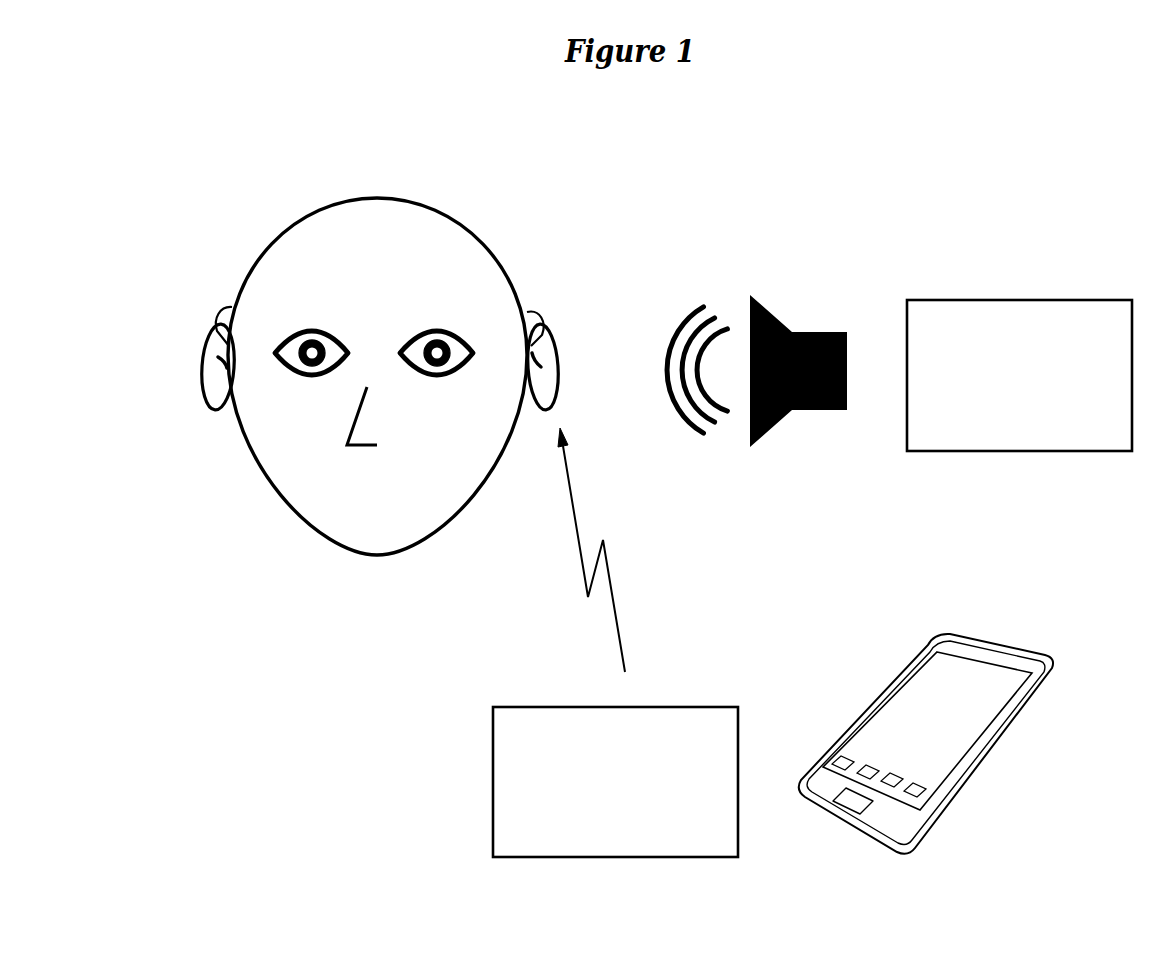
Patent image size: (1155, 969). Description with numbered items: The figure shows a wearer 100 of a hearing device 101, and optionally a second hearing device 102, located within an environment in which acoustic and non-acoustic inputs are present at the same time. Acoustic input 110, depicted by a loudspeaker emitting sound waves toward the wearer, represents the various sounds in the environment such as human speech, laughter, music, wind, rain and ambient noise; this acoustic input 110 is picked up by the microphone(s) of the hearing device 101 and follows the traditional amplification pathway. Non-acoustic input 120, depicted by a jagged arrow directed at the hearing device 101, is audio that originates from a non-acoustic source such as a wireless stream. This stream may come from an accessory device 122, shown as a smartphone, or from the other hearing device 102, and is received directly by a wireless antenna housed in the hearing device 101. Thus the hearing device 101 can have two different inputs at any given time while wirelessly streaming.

The wearer 100 is at (477, 249).
The hearing device 101 is at (538, 314).
The hearing device 102 is at (224, 314).
The acoustic input 110 is at (1025, 300).
The non-acoustic input 120 is at (692, 707).
The accessory device 122 is at (1037, 650).